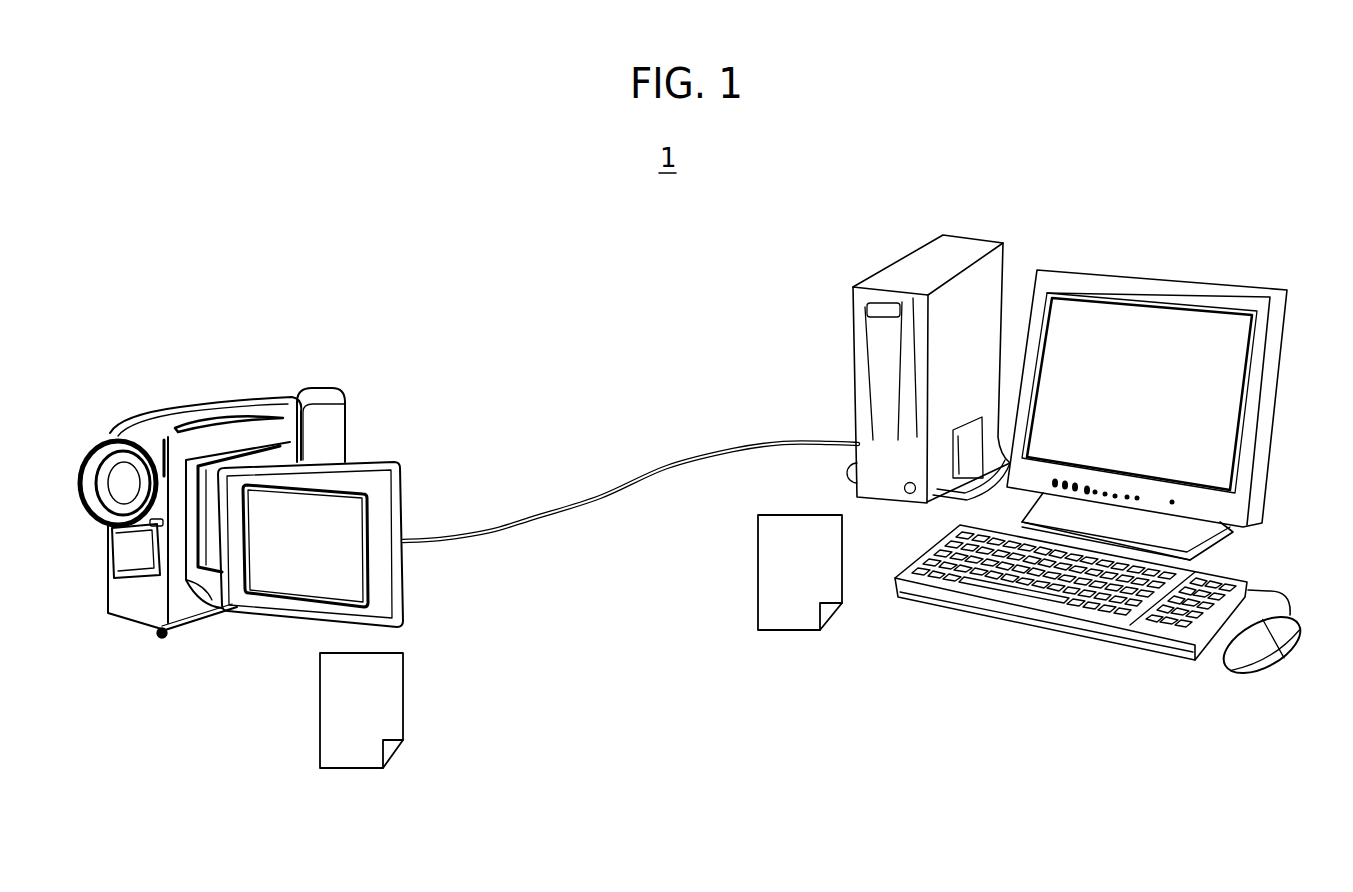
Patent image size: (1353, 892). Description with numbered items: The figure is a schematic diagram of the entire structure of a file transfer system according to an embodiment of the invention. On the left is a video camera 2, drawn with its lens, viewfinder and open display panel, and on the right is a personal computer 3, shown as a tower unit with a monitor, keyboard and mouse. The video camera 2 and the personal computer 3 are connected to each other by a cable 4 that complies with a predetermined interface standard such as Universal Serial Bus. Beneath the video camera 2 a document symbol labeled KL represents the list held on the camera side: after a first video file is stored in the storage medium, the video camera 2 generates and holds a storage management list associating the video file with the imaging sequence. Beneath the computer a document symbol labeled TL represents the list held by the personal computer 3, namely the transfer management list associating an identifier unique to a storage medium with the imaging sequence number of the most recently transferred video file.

The video camera 2 is at (210, 617).
The personal computer 3 is at (1043, 633).
The cable 4 is at (597, 503).
The camera-side list document KL is at (357, 770).
The terminal-side list document TL is at (795, 632).